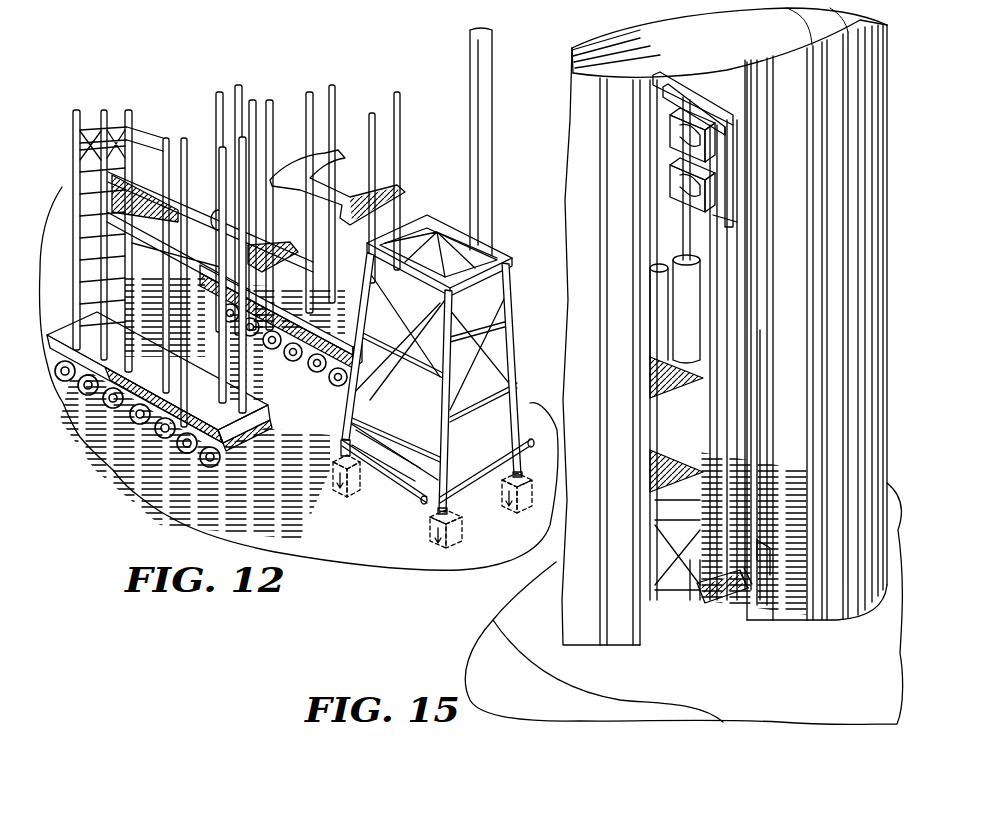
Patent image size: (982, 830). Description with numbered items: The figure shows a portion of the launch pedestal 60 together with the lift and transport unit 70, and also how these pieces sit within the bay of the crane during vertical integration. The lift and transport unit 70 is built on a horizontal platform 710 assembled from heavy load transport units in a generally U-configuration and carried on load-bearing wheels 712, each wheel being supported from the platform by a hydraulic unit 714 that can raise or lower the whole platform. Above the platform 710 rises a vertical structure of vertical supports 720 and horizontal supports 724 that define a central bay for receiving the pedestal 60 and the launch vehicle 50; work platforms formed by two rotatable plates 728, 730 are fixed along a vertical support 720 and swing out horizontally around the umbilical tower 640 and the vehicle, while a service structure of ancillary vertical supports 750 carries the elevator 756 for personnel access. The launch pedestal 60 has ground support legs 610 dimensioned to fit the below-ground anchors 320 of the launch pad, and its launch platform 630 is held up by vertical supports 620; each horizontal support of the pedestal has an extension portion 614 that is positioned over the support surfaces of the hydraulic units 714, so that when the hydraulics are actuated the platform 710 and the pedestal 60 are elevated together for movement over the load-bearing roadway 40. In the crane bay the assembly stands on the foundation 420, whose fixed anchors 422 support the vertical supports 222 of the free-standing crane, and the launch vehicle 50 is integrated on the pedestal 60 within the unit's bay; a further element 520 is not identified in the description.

In FIG. 12, the lift and transport unit 70 is at (192, 68).
In FIG. 12, the ancillary vertical supports 750 is at (73, 117).
In FIG. 12, the elevator 756 is at (90, 127).
In FIG. 12, the horizontal supports 724 is at (141, 227).
In FIG. 12, the plate 728 is at (197, 207).
In FIG. 15, the plate 728 is at (653, 200).
In FIG. 12, the plate 730 is at (350, 187).
In FIG. 15, the plate 730 is at (712, 192).
In FIG. 12, the umbilical tower 640 is at (472, 85).
In FIG. 12, the launch pedestal 60 is at (415, 319).
In FIG. 15, the launch pedestal 60 is at (690, 525).
In FIG. 12, the launch platform 630 is at (455, 220).
In FIG. 12, the vertical supports 620 is at (510, 380).
In FIG. 12, the extension portion 614 is at (533, 433).
In FIG. 15, the extension portion 614 is at (713, 603).
In FIG. 12, the ground support legs 610 is at (356, 457).
In FIG. 12, the below-ground anchors 320 is at (337, 498).
In FIG. 12, the hydraulic unit 714 is at (147, 350).
In FIG. 12, the vertical supports 720 is at (272, 392).
In FIG. 15, the vertical supports 720 is at (733, 410).
In FIG. 12, the horizontal platform 710 is at (203, 462).
In FIG. 15, the horizontal platform 710 is at (700, 600).
In FIG. 12, the load-bearing wheels 712 is at (210, 465).
In FIG. 15, the load-bearing wheels 712 is at (743, 597).
In FIG. 15, the load-bearing roadway 40 is at (878, 712).
In FIG. 15, the foundation 420 is at (560, 663).
In FIG. 15, the vertical supports 222 is at (753, 303).
In FIG. 15, the launch vehicle 50 is at (653, 295).
In FIG. 15, the actuator cylinder 520 is at (680, 323).
In FIG. 15, the fixed anchors 422 is at (758, 560).